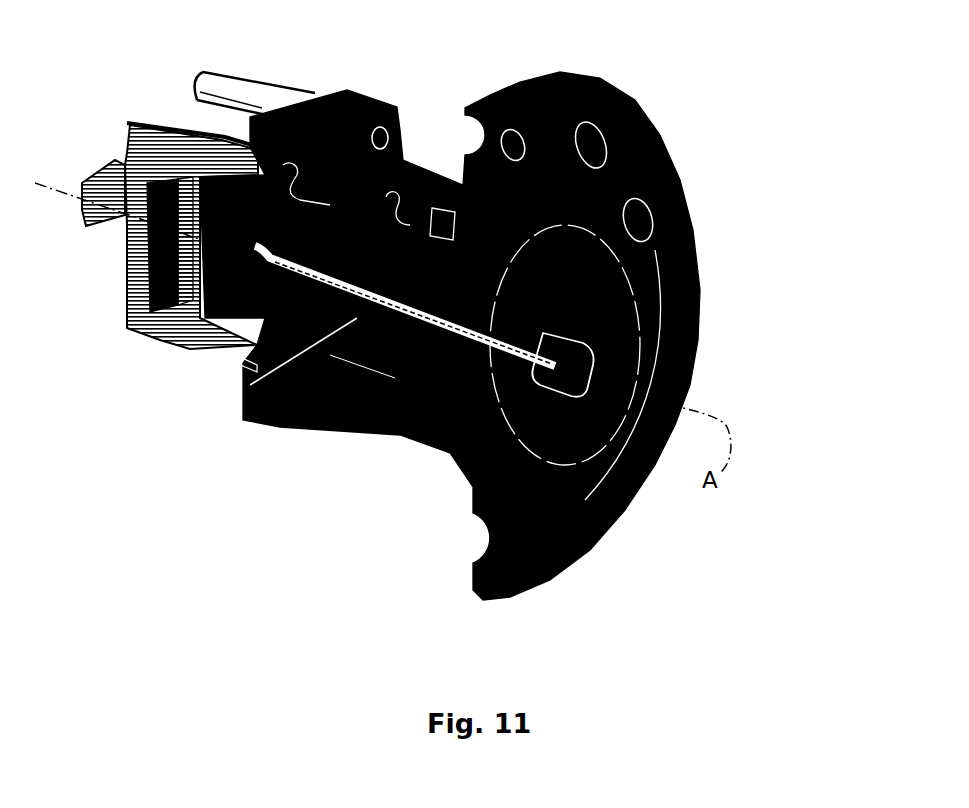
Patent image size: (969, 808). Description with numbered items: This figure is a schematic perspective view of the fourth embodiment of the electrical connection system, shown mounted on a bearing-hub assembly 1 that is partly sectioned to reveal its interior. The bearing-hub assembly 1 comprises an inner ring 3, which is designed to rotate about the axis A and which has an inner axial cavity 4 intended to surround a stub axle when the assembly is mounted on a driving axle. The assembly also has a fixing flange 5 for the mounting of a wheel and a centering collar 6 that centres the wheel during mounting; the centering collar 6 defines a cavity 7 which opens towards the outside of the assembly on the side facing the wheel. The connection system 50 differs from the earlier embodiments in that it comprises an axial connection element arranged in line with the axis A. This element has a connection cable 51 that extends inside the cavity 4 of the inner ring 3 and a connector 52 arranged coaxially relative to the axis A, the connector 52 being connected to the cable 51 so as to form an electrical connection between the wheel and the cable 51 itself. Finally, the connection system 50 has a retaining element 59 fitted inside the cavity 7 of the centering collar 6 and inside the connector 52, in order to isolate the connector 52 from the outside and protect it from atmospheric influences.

The bearing-hub assembly 1 is at (640, 100).
The inner ring 3 is at (250, 385).
The inner axial cavity 4 is at (420, 312).
The fixing flange 5 is at (648, 163).
The centering collar 6 is at (640, 273).
The cavity 7 is at (643, 355).
The connection system 50 is at (642, 380).
The connection cable 51 is at (387, 315).
The connector 52 is at (613, 430).
The retaining element 59 is at (640, 296).